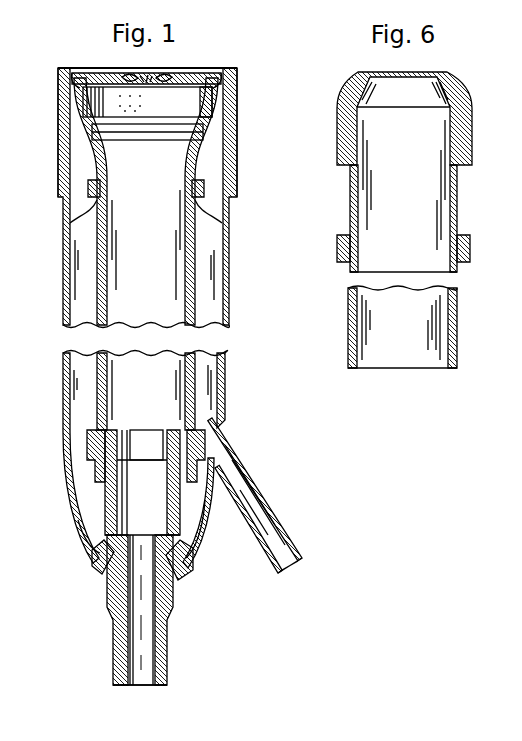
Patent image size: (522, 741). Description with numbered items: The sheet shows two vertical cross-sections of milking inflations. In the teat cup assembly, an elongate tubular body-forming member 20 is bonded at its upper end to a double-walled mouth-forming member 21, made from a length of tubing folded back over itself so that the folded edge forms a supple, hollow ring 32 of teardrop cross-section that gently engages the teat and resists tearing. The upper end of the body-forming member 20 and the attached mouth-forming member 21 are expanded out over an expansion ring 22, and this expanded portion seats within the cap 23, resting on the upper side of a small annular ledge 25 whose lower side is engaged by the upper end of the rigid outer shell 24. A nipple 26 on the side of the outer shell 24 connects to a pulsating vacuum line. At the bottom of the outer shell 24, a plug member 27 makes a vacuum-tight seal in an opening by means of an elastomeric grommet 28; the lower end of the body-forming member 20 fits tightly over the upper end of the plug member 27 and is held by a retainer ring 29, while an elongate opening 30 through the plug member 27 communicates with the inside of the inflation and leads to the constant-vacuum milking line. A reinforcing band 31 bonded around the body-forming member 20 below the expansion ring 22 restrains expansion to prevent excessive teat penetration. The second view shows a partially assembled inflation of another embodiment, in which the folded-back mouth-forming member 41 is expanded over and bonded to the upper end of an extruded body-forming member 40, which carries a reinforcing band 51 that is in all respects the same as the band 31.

In FIG. 1, the body-forming member 20 is at (195, 278).
In FIG. 1, the mouth-forming member 21 is at (82, 74).
In FIG. 1, the expansion ring 22 is at (162, 98).
In FIG. 1, the cap 23 is at (58, 121).
In FIG. 1, the outer shell 24 is at (63, 285).
In FIG. 1, the annular ledge 25 is at (146, 177).
In FIG. 1, the nipple 26 is at (270, 504).
In FIG. 1, the plug member 27 is at (165, 445).
In FIG. 1, the grommet 28 is at (93, 570).
In FIG. 1, the retainer ring 29 is at (200, 446).
In FIG. 1, the elongate opening 30 is at (150, 680).
In FIG. 1, the reinforcing band 31 is at (70, 223).
In FIG. 1, the hollow ring 32 is at (122, 72).
In FIG. 6, the body-forming member 40 is at (350, 196).
In FIG. 6, the mouth-forming member 41 is at (338, 100).
In FIG. 6, the reinforcing band 51 is at (337, 252).